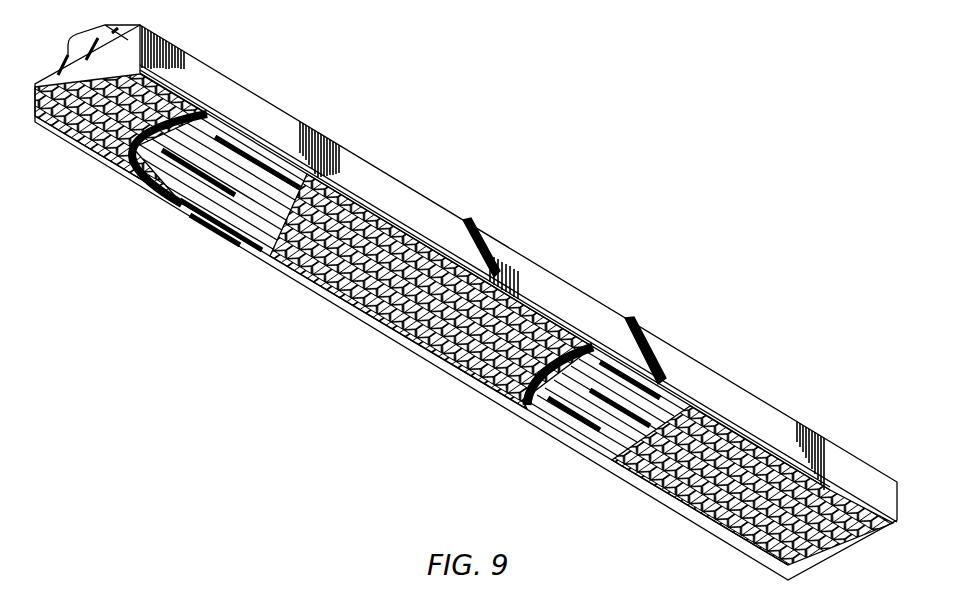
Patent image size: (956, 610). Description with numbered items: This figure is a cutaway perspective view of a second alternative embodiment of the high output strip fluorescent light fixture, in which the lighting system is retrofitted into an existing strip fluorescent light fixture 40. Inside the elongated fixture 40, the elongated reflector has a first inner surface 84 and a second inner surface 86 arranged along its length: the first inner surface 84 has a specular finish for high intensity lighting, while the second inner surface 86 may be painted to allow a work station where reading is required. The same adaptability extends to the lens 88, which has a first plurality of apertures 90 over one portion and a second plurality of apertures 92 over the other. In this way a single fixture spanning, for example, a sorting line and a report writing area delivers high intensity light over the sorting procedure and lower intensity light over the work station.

The strip fluorescent light fixture 40 is at (254, 86).
The first inner surface 84 is at (207, 219).
The second inner surface 86 is at (612, 362).
The lens 88 is at (413, 232).
The first plurality of apertures 90 is at (295, 282).
The second plurality of apertures 92 is at (660, 482).